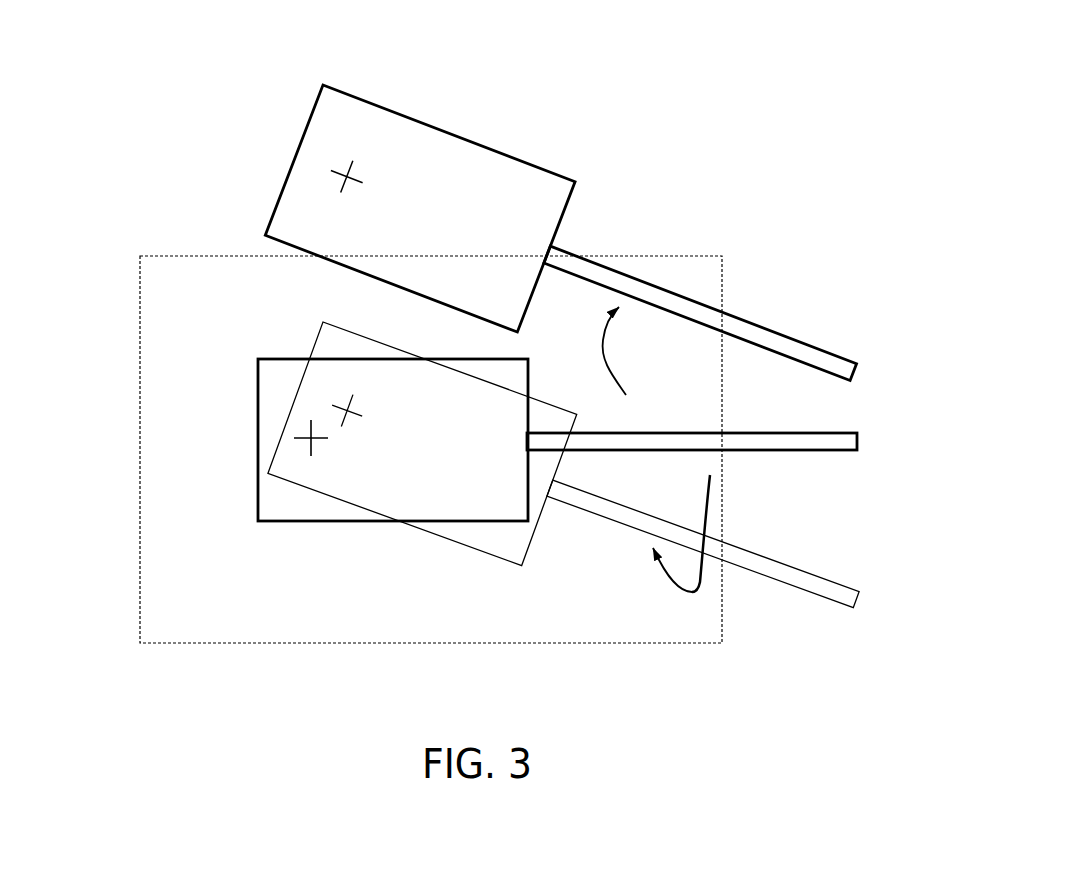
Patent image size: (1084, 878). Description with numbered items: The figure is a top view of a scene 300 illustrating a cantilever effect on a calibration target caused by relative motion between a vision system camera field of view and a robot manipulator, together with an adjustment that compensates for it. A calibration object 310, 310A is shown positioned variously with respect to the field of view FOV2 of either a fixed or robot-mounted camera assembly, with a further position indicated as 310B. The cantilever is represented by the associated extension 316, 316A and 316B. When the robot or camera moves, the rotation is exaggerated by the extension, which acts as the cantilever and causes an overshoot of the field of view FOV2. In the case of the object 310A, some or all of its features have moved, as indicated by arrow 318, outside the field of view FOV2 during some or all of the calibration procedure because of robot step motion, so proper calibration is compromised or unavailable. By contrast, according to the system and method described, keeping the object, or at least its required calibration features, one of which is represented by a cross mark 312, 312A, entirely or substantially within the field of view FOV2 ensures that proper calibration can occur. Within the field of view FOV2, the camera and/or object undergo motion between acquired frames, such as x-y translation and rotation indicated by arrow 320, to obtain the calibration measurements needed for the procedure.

The scene 300 is at (678, 200).
The calibration object 310 is at (343, 480).
The calibration object 310A is at (447, 167).
The target object at second rotated position 310B is at (305, 437).
The cross mark 312 is at (352, 410).
The cross mark 312A is at (347, 163).
The extension 316 is at (857, 442).
The extension 316A is at (858, 370).
The extension 316B is at (860, 596).
The arrow 318 is at (603, 353).
The arrow 320 is at (690, 592).
The field of view FOV2 is at (127, 307).